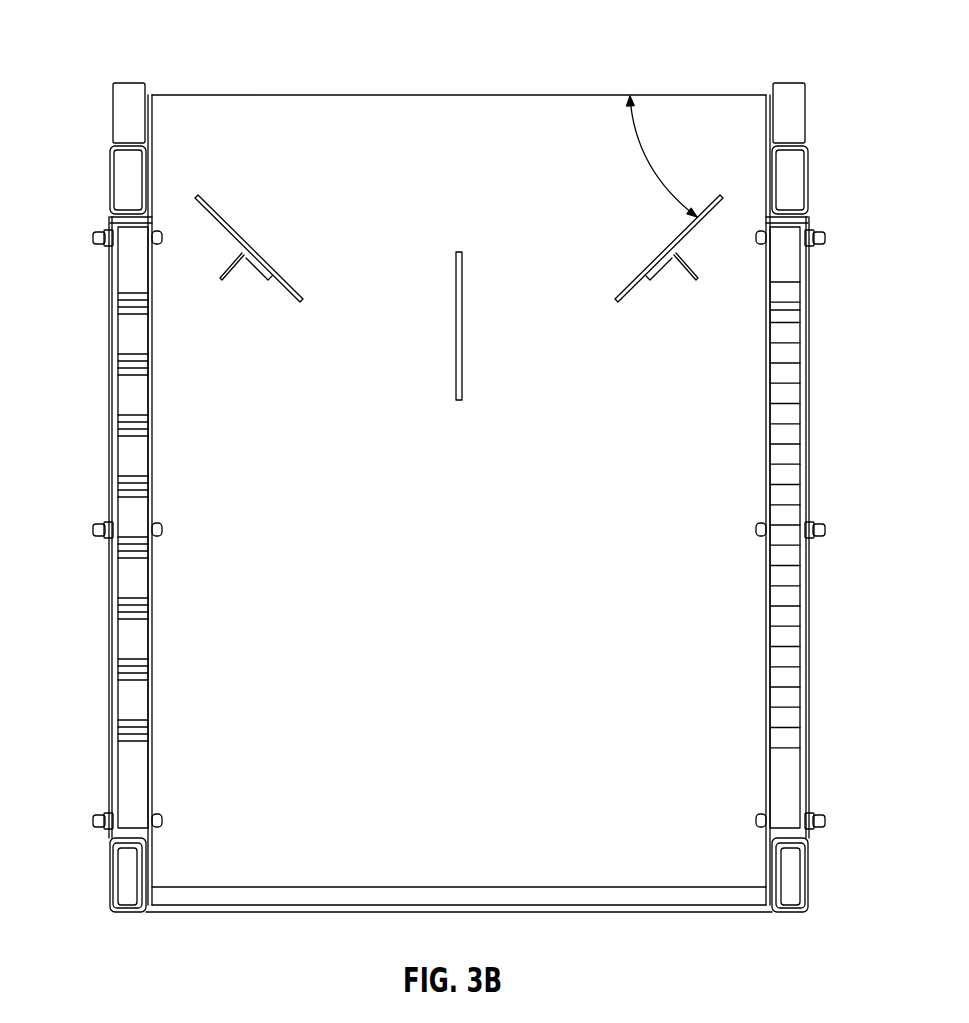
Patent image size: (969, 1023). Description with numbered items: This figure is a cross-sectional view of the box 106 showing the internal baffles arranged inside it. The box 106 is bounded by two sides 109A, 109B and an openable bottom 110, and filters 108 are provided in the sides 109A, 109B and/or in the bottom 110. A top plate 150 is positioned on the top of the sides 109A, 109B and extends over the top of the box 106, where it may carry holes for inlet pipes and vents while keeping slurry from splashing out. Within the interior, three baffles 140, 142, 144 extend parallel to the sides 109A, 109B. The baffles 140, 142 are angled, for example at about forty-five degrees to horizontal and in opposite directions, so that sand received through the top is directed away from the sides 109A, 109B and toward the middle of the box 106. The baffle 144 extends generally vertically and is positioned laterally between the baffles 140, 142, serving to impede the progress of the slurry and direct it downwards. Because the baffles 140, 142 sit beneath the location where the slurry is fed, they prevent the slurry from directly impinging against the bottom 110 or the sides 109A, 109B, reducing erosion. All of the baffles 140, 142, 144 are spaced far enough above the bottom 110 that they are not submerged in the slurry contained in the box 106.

The box 106 is at (204, 46).
The filters 108 is at (120, 645).
The side 109A is at (110, 722).
The side 109B is at (810, 663).
The openable bottom 110 is at (613, 913).
The baffle 140 is at (280, 300).
The baffle 142 is at (640, 288).
The baffle 144 is at (456, 378).
The top plate 150 is at (575, 95).